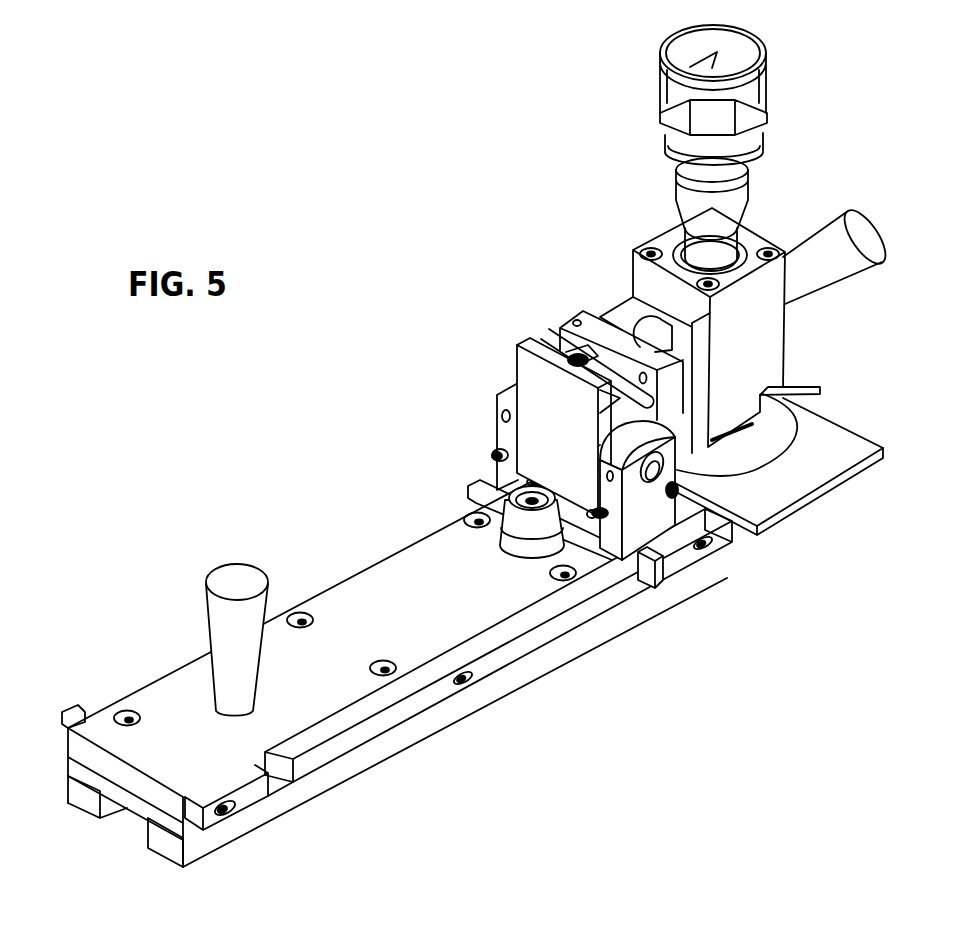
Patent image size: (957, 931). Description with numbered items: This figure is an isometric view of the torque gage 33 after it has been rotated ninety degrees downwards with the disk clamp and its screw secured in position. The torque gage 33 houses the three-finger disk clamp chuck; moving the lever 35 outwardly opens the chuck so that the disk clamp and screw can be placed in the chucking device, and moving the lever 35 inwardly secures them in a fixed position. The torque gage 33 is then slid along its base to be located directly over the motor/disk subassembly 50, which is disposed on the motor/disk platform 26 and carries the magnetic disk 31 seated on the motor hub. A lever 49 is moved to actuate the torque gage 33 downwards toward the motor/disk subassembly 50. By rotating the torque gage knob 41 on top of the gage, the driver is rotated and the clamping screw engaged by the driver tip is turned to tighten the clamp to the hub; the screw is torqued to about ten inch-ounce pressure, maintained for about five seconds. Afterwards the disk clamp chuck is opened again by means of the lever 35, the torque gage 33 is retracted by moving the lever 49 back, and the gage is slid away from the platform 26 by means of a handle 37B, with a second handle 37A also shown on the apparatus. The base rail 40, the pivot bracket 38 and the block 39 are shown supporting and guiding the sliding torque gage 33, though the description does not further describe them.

The motor/disk platform 26 is at (826, 457).
The magnetic disk 31 is at (750, 453).
The torque gage tool 33 is at (768, 352).
The lever 35 is at (820, 386).
The handle 37A is at (860, 233).
The handle 37B is at (232, 575).
The pivot bracket 38 is at (661, 483).
The clamp block 39 is at (635, 537).
The rail 40 is at (497, 685).
The torque gage knob 41 is at (777, 83).
The lever 49 is at (560, 338).
The motor/disk subassembly 50 is at (866, 434).